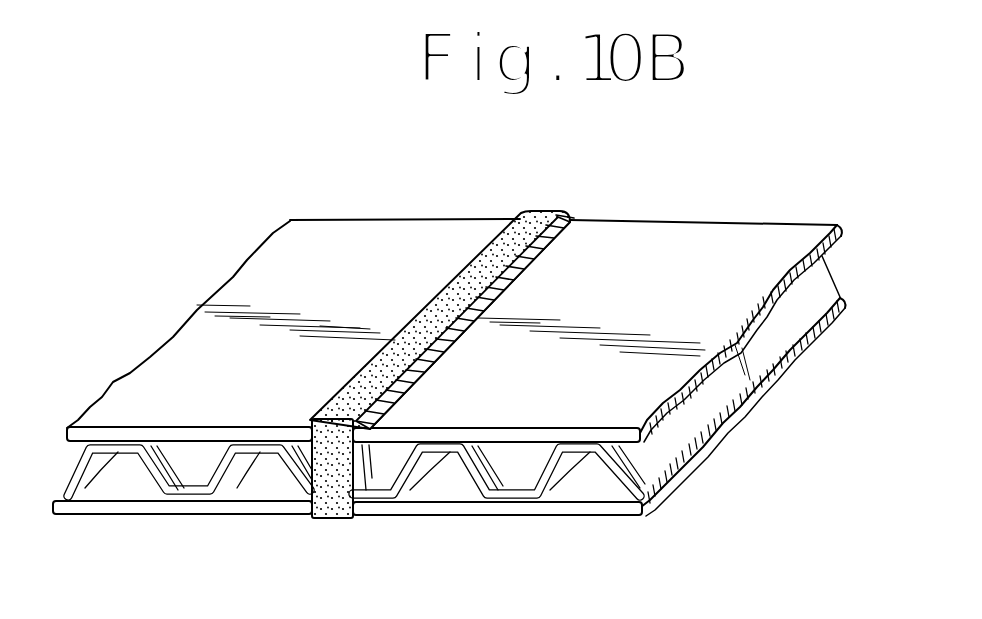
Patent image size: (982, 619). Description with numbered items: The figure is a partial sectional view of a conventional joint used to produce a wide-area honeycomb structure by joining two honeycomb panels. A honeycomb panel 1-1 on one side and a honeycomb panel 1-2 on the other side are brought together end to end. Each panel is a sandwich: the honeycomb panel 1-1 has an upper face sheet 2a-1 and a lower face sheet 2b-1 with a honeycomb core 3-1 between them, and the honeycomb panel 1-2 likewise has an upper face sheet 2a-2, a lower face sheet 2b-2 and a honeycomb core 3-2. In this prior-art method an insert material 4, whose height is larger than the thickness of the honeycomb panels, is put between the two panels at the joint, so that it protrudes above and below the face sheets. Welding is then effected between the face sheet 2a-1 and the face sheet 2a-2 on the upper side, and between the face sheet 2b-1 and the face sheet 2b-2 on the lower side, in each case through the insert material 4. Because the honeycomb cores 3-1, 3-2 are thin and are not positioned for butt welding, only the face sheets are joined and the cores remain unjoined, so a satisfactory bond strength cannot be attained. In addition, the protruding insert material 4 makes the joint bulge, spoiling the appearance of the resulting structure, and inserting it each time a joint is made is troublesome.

The honeycomb panel 1-1 is at (713, 290).
The honeycomb panel 1-2 is at (313, 285).
The face sheet 2a-1 is at (641, 233).
The face sheet 2a-2 is at (418, 230).
The face sheet 2b-1 is at (527, 508).
The face sheet 2b-2 is at (222, 505).
The honeycomb core 3-1 is at (547, 465).
The honeycomb core 3-2 is at (220, 465).
The insert material 4 is at (530, 211).